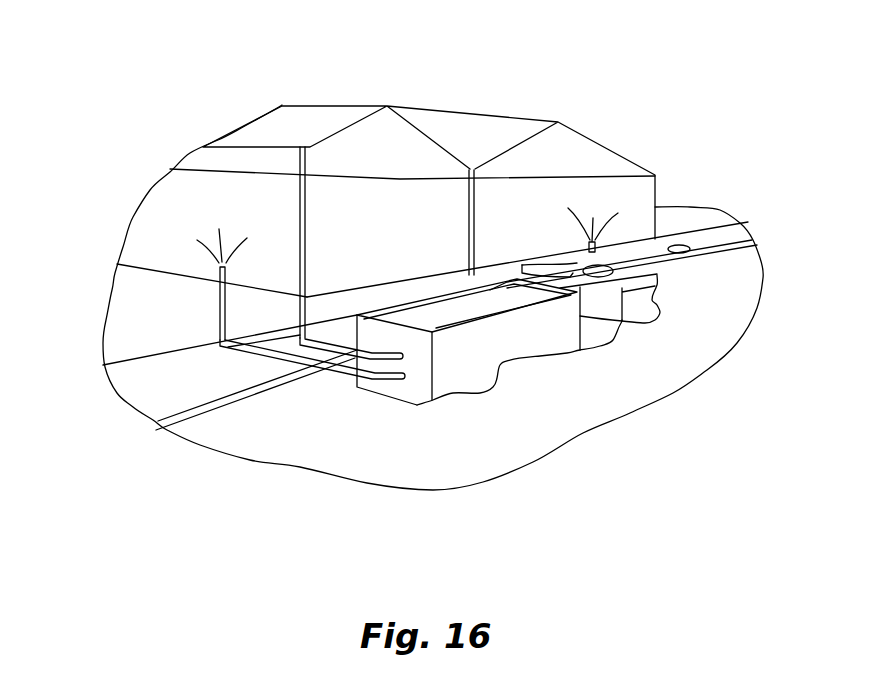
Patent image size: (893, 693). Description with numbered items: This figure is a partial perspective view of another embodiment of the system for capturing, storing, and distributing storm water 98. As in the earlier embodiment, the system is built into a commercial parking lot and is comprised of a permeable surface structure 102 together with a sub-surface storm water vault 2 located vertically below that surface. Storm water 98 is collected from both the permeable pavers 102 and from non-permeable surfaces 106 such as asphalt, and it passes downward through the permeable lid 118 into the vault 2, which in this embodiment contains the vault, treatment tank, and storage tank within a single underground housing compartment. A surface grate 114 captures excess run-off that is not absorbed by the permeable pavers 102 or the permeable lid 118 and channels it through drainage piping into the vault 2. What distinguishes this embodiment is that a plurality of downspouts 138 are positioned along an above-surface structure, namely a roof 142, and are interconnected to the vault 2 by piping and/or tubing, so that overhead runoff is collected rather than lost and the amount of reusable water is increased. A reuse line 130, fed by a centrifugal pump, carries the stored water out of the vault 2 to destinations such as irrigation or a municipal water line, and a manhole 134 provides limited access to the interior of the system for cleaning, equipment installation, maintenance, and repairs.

The sub-surface storm water vault 2 is at (447, 378).
The storm water 98 is at (573, 273).
The permeable surface structure 102 is at (173, 383).
The non-permeable surface 106 is at (722, 295).
The surface grate 114 is at (220, 343).
The permeable lid 118 is at (453, 308).
The reuse line 130 is at (218, 288).
The manhole 134 is at (688, 246).
The downspout 138 is at (297, 147).
The roof 142 is at (323, 122).